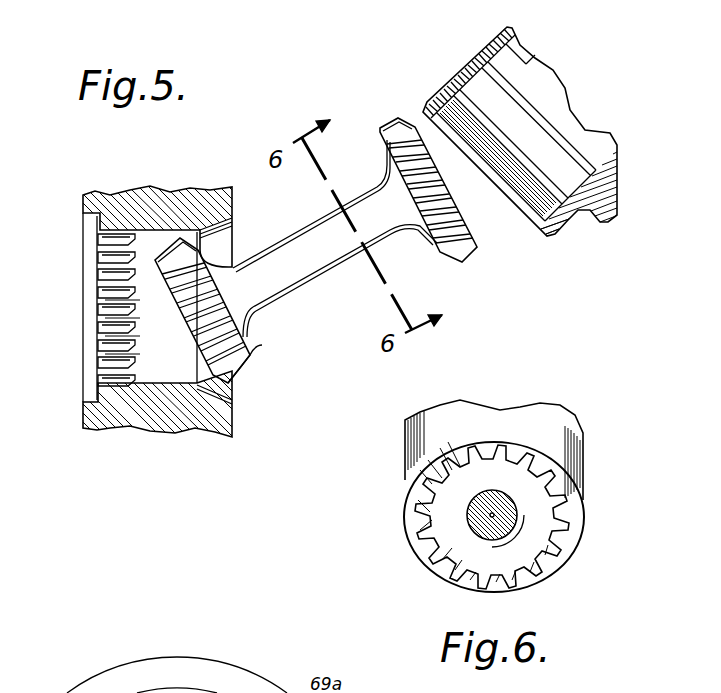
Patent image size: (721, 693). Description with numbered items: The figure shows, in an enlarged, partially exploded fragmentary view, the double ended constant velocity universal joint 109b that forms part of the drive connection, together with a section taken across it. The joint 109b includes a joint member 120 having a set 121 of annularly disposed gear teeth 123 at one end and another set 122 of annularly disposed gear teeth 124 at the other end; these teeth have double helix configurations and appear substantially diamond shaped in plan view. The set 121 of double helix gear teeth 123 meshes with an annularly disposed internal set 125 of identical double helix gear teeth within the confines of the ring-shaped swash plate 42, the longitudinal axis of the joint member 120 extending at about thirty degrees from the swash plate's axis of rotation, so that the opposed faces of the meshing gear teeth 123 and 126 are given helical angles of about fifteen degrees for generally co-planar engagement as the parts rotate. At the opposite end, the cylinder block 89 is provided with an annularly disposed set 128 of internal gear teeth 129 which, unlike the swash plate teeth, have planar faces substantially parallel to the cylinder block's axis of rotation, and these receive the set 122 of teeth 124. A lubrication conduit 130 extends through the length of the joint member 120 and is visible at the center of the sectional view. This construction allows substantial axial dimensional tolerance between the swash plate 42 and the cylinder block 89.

In FIG. 5, the swash plate 42 is at (188, 417).
In FIG. 5, the internal set of double helix gear teeth 125 is at (98, 302).
In FIG. 5, the gear teeth 126 is at (95, 328).
In FIG. 5, the gear teeth 124 is at (397, 123).
In FIG. 6, the gear teeth 124 is at (440, 570).
In FIG. 5, the set of annularly disposed gear teeth 122 is at (467, 243).
In FIG. 5, the set of annularly disposed gear teeth 121 is at (227, 313).
In FIG. 5, the gear teeth 123 is at (252, 357).
In FIG. 5, the constant velocity universal joint 109b is at (280, 233).
In FIG. 5, the cylinder block 89 is at (620, 140).
In FIG. 6, the cylinder block 89 is at (552, 427).
In FIG. 5, the internal gear teeth 129 is at (452, 88).
In FIG. 6, the internal gear teeth 129 is at (433, 477).
In FIG. 5, the set of internal gear teeth 128 is at (535, 208).
In FIG. 6, the lubrication conduit 130 is at (493, 513).
In FIG. 6, the joint member 120 is at (523, 550).